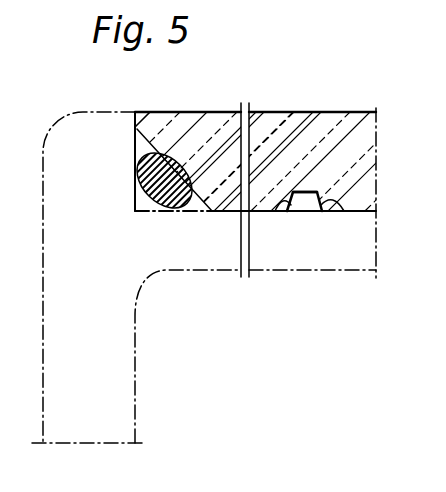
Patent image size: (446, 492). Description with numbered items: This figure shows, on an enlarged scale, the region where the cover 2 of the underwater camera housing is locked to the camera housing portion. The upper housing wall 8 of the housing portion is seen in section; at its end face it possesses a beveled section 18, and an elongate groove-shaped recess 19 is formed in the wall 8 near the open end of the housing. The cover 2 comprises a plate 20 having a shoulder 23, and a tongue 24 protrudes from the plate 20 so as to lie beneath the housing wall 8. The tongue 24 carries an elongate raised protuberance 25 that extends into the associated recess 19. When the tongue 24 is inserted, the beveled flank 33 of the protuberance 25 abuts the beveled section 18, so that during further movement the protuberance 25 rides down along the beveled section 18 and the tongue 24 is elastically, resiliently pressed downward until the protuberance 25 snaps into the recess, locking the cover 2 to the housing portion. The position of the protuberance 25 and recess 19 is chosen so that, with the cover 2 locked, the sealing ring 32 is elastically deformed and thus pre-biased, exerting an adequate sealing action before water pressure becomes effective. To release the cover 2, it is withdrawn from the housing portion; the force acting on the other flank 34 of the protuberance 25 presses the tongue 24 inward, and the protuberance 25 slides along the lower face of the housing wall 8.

The cover 2 is at (60, 109).
The upper housing wall 8 is at (266, 128).
The beveled section 18 is at (153, 137).
The groove-shaped recess 19 is at (305, 190).
The plate 20 is at (120, 370).
The shoulder 23 is at (137, 131).
The tongue 24 is at (275, 252).
The protuberance 25 is at (304, 200).
The sealing ring 32 is at (152, 184).
The flank 33 is at (336, 201).
The flank 34 is at (283, 203).